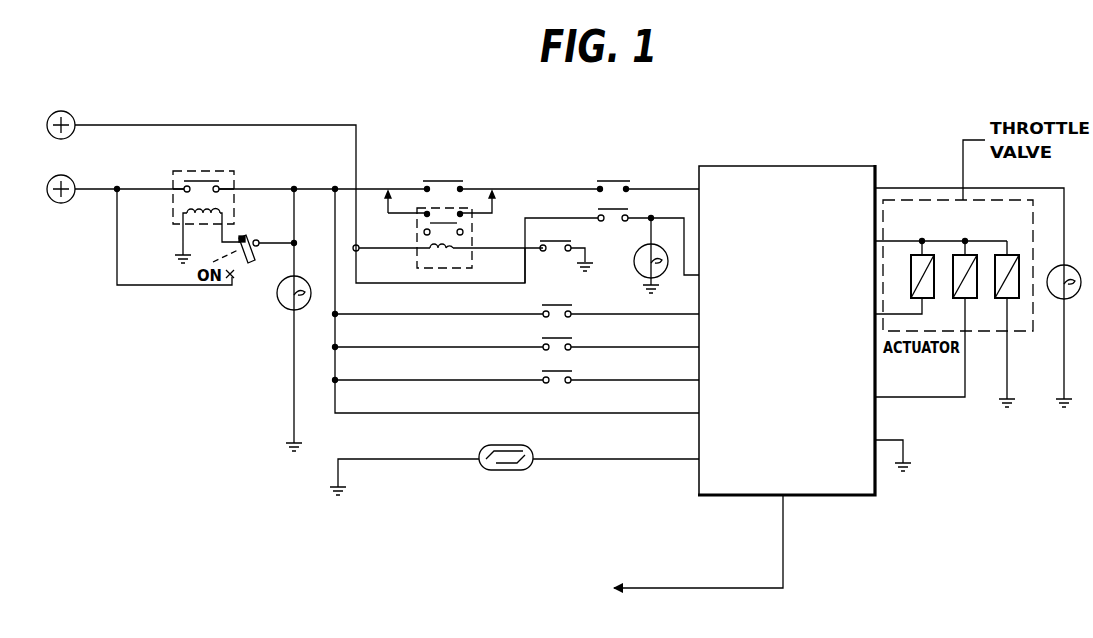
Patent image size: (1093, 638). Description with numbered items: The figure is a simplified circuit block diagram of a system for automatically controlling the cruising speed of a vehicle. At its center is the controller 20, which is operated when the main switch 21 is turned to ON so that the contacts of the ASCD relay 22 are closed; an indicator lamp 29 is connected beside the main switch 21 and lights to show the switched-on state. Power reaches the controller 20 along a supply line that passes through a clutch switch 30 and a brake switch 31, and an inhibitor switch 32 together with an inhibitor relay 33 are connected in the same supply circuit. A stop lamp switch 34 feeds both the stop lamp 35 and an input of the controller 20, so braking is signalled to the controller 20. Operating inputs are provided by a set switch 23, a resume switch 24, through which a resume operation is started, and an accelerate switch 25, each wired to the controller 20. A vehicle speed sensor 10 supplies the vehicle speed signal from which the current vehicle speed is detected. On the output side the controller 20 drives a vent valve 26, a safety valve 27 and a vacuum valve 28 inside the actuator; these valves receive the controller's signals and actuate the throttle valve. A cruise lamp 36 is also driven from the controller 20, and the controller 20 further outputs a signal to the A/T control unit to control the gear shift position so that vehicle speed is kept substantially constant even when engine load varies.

The vehicle speed sensor 10 is at (506, 472).
The controller 20 is at (778, 165).
The main switch 21 is at (247, 276).
The ASCD relay 22 is at (164, 183).
The set switch 23 is at (553, 302).
The resume switch 24 is at (576, 337).
The accelerate switch 25 is at (576, 370).
The vent valve 26 is at (909, 253).
The safety valve 27 is at (961, 253).
The vacuum valve 28 is at (1012, 253).
The indicator lamp 29 is at (305, 279).
The clutch switch 30 is at (442, 178).
The brake switch 31 is at (612, 178).
The inhibitor switch 32 is at (553, 240).
The inhibitor relay 33 is at (478, 242).
The stop lamp switch 34 is at (613, 225).
The stop lamp 35 is at (639, 273).
The cruise lamp 36 is at (1052, 300).